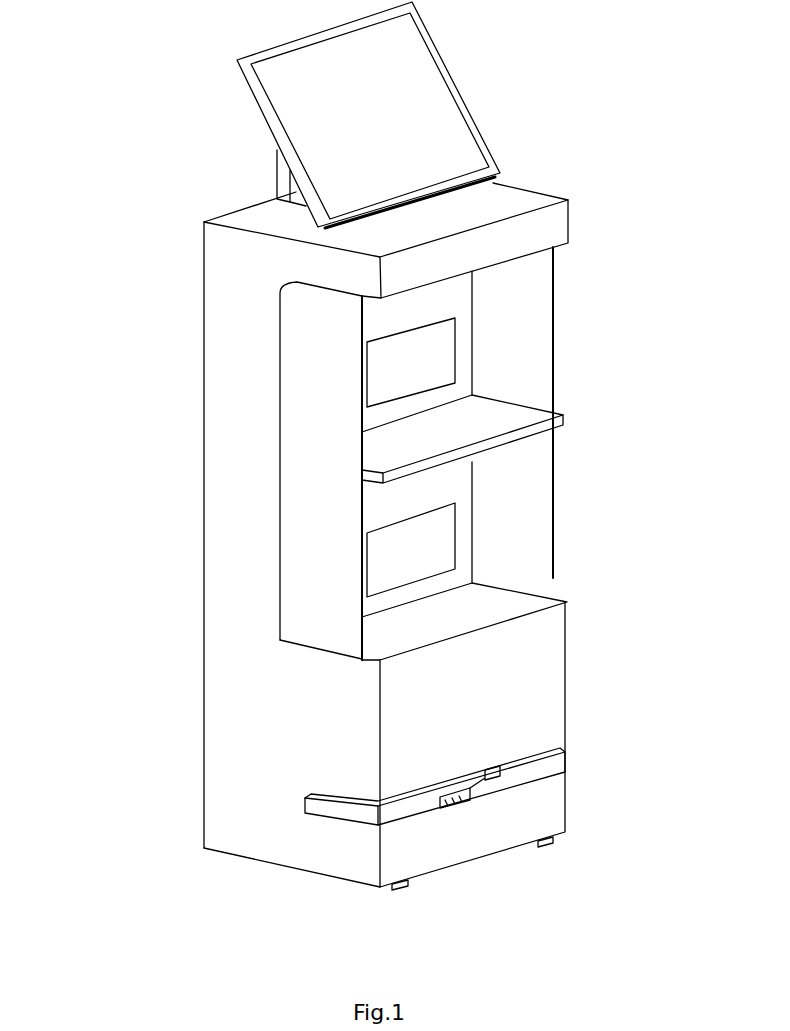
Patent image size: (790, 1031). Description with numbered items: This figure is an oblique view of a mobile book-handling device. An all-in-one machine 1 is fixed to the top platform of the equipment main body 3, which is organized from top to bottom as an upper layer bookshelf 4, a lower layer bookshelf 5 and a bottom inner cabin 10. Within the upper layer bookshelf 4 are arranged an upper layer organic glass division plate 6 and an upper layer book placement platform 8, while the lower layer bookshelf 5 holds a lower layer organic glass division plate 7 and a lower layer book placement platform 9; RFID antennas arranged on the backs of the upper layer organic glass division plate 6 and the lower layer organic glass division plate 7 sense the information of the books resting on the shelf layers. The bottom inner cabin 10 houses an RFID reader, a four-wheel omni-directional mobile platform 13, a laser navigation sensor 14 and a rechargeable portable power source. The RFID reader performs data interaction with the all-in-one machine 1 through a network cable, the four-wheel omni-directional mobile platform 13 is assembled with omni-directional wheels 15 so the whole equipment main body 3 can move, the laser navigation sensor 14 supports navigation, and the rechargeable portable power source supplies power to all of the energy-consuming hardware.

The all-in-one machine 1 is at (380, 113).
The equipment main body 3 is at (227, 252).
The upper layer bookshelf 4 is at (452, 300).
The lower layer bookshelf 5 is at (452, 485).
The upper layer organic glass division plate 6 is at (418, 363).
The lower layer organic glass division plate 7 is at (418, 547).
The upper layer book placement platform 8 is at (452, 427).
The lower layer book placement platform 9 is at (452, 615).
The bottom inner cabin 10 is at (260, 740).
The four-wheel omni-directional mobile platform 13 is at (378, 820).
The laser navigation sensor 14 is at (480, 790).
The omni-directional wheels 15 is at (402, 893).